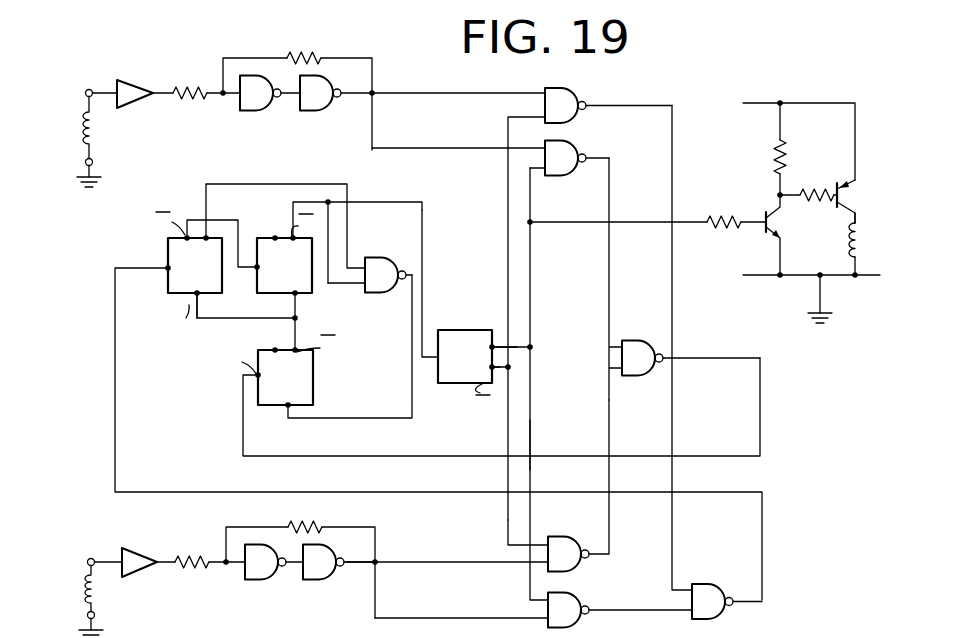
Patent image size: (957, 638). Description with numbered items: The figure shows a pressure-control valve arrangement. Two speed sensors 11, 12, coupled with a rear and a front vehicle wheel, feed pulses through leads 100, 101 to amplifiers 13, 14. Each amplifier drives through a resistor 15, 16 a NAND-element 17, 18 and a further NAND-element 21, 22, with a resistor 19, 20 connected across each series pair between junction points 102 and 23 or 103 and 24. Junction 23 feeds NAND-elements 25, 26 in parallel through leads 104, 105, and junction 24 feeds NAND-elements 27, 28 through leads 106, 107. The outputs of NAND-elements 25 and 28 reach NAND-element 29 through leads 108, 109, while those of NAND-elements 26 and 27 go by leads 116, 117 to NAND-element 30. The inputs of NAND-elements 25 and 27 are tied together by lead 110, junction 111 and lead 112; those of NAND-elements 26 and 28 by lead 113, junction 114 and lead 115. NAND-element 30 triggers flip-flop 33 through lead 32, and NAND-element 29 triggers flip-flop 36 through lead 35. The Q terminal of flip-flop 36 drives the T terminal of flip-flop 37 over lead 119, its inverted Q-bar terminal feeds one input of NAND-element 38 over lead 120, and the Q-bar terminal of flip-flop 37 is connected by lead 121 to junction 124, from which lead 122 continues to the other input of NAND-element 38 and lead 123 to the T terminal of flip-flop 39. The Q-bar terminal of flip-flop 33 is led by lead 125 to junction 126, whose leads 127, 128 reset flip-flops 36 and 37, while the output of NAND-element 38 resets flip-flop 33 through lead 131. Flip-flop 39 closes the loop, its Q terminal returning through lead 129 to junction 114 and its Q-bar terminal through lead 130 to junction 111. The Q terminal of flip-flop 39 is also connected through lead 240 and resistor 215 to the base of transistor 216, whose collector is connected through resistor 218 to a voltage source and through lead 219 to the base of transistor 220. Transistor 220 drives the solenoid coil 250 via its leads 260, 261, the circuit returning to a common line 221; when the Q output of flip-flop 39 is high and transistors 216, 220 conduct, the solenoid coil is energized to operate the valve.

The lead means 100 is at (91, 89).
The lead means 101 is at (92, 556).
The sensor 11 is at (94, 126).
The sensor 12 is at (96, 598).
The amplifier 13 is at (128, 81).
The amplifier 14 is at (129, 550).
The resistor 15 is at (180, 88).
The resistor 16 is at (182, 557).
The NAND-element 17 is at (263, 103).
The NAND-element 18 is at (265, 575).
The resistor 19 is at (300, 57).
The resistor 20 is at (320, 526).
The NAND-element 21 is at (315, 103).
The NAND-element 22 is at (332, 575).
The junction point 23 is at (375, 96).
The junction point 24 is at (378, 560).
The NAND-element 25 is at (578, 110).
The NAND-element 26 is at (568, 168).
The NAND-element 27 is at (563, 540).
The NAND-element 28 is at (580, 600).
The NAND-element 29 is at (710, 585).
The NAND-element 30 is at (636, 340).
The lead 32 is at (446, 455).
The flip-flop 33 is at (314, 378).
The lead 35 is at (445, 491).
The flip-flop 36 is at (167, 250).
The flip-flop 37 is at (300, 320).
The NAND-element 38 is at (380, 258).
The flip-flop 39 is at (470, 330).
The junction point 102 is at (223, 97).
The junction point 103 is at (226, 566).
The lead 104 is at (448, 92).
The lead 105 is at (438, 147).
The lead 106 is at (505, 561).
The lead 107 is at (427, 618).
The lead 108 is at (674, 306).
The lead 109 is at (605, 612).
The lead 110 is at (507, 186).
The junction 111 is at (511, 367).
The lead 112 is at (507, 524).
The lead 113 is at (532, 256).
The junction 114 is at (532, 345).
The lead 115 is at (532, 440).
The lead 116 is at (611, 272).
The lead 117 is at (611, 427).
The lead 119 is at (237, 222).
The lead 120 is at (262, 183).
The lead 121 is at (310, 200).
The line 122 is at (362, 300).
The lead 123 is at (423, 226).
The junction 124 is at (332, 200).
The lead 125 is at (237, 321).
The junction 126 is at (300, 322).
The lead 127 is at (197, 322).
The lead 128 is at (280, 343).
The lead 129 is at (517, 340).
The lead 130 is at (498, 370).
The lead 131 is at (412, 425).
The resistor 215 is at (726, 227).
The transistor 216 is at (764, 215).
The resistor 218 is at (778, 152).
The lead 219 is at (812, 191).
The transistor 220 is at (846, 184).
The ground line 221 is at (779, 278).
The lead 240 is at (628, 221).
The solenoid coil 250 is at (841, 247).
The collector lead 260 is at (856, 218).
The coil lead 261 is at (856, 270).